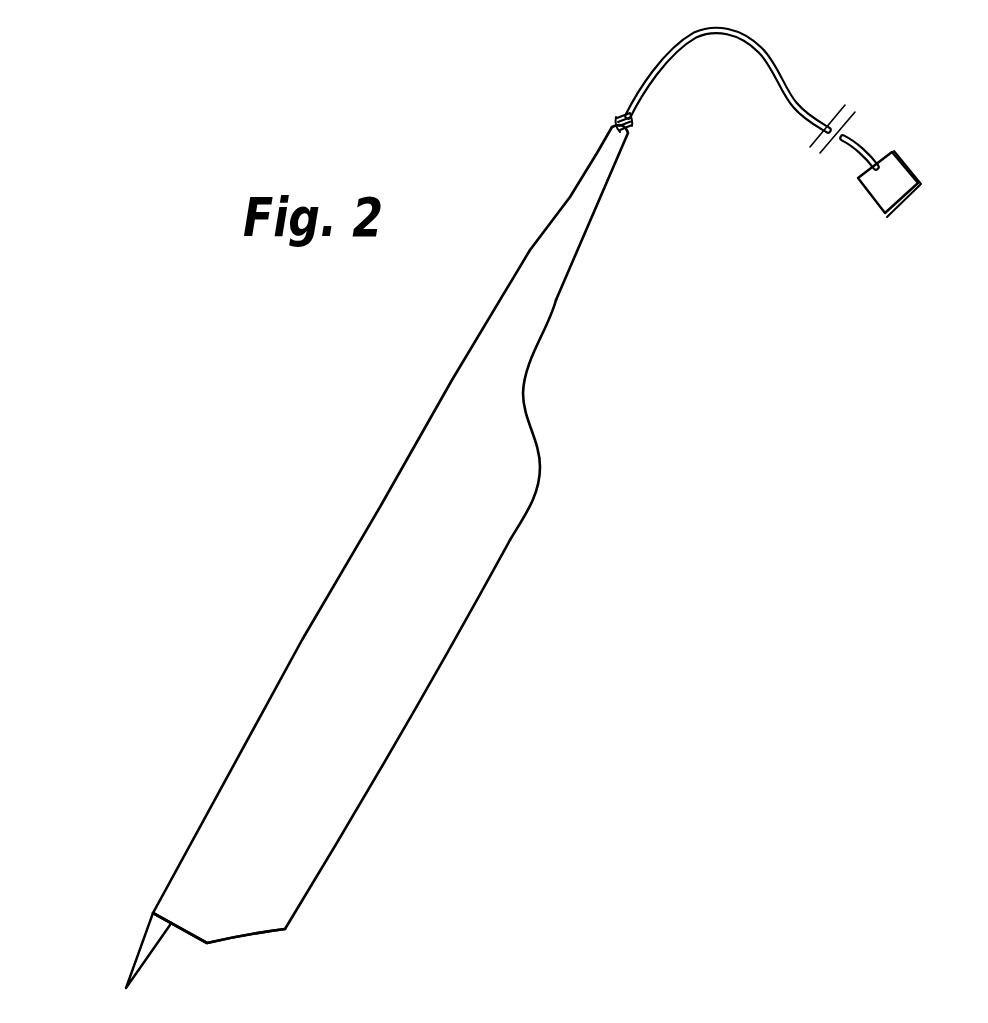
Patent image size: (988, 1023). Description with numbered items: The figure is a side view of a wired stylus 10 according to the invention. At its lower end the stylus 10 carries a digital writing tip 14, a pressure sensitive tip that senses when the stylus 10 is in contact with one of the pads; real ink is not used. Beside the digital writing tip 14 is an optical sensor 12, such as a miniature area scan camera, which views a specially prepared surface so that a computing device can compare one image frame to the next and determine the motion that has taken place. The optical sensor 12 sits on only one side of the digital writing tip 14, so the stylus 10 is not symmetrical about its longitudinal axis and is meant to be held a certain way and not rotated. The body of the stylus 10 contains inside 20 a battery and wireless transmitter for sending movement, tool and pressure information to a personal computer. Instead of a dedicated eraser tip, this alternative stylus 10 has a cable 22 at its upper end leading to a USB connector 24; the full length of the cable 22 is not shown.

The stylus 10 is at (331, 466).
The optical sensor 12 is at (183, 937).
The digital writing tip 14 is at (129, 974).
The inside 20 is at (482, 478).
The cable 22 is at (747, 37).
The USB connector 24 is at (870, 197).